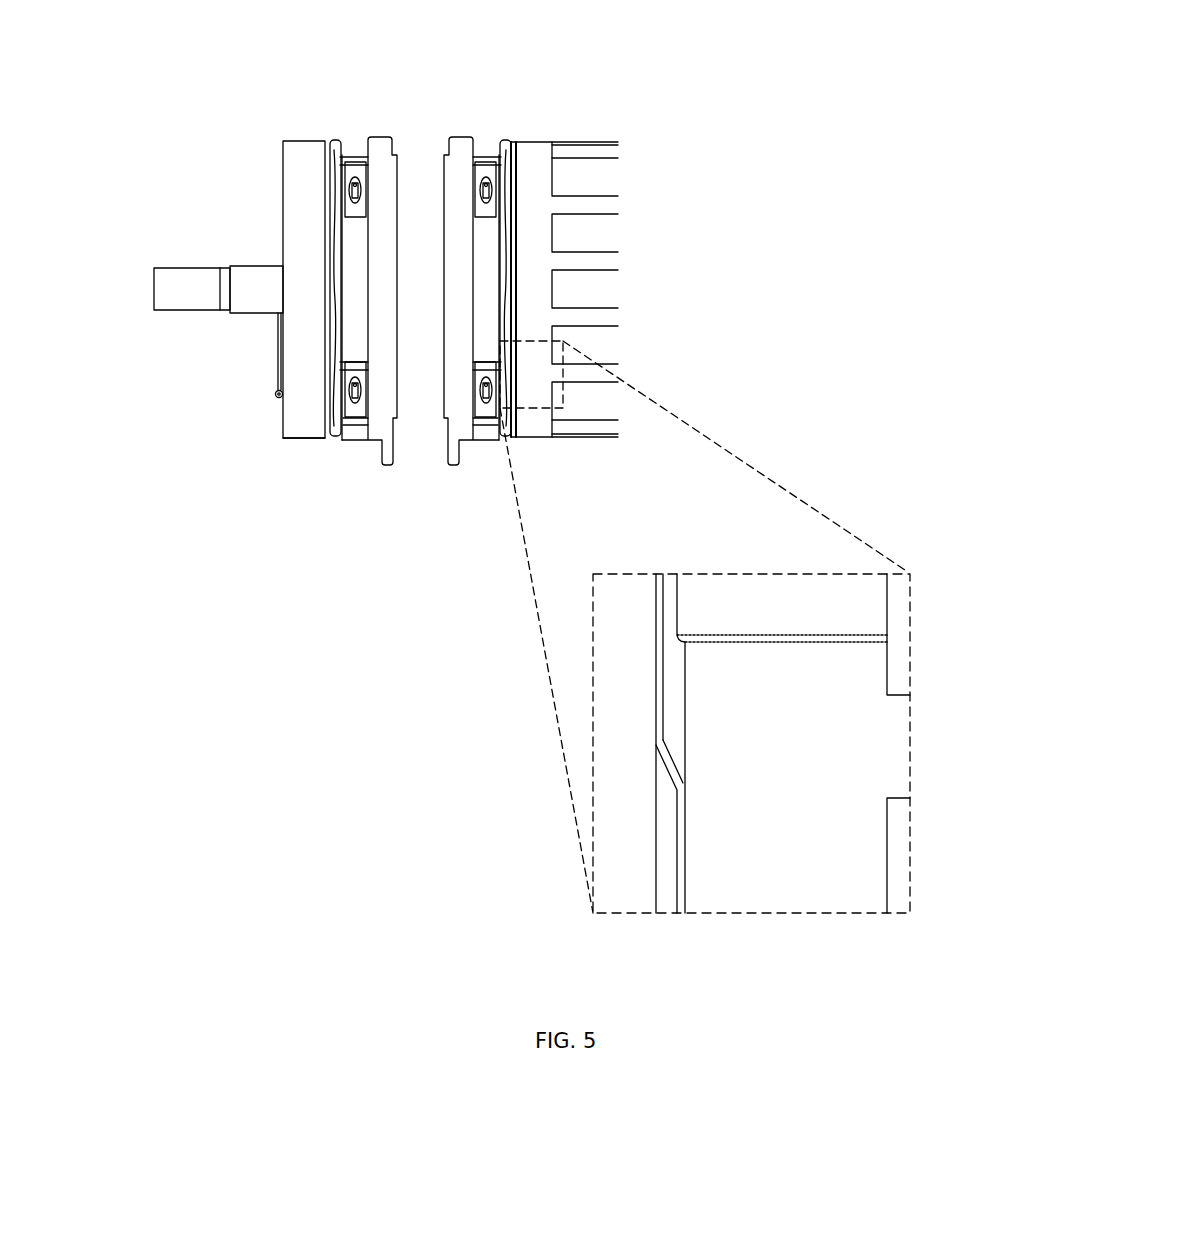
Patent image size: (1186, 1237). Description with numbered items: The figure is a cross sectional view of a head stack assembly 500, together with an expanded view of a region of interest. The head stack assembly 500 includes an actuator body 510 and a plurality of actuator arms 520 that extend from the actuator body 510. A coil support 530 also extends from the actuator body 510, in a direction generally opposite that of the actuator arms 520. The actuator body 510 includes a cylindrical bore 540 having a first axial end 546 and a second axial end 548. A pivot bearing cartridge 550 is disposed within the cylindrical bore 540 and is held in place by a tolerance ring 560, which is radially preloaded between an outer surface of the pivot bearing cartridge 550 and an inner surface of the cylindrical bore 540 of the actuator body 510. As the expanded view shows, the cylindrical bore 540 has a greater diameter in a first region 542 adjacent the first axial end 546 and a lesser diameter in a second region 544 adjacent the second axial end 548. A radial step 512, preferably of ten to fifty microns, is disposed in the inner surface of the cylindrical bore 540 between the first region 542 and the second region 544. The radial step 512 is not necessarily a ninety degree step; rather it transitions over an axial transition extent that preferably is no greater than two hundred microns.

The head stack assembly 500 is at (704, 51).
The actuator body 510 is at (302, 183).
The radial step 512 is at (683, 642).
The actuator arms 520 is at (588, 152).
The coil support 530 is at (195, 273).
The cylindrical bore 540 is at (411, 435).
The first region 542 is at (792, 681).
The second region 544 is at (792, 618).
The first axial end 546 is at (308, 440).
The second axial end 548 is at (293, 140).
The pivot bearing cartridge 550 is at (333, 140).
The tolerance ring 560 is at (659, 585).